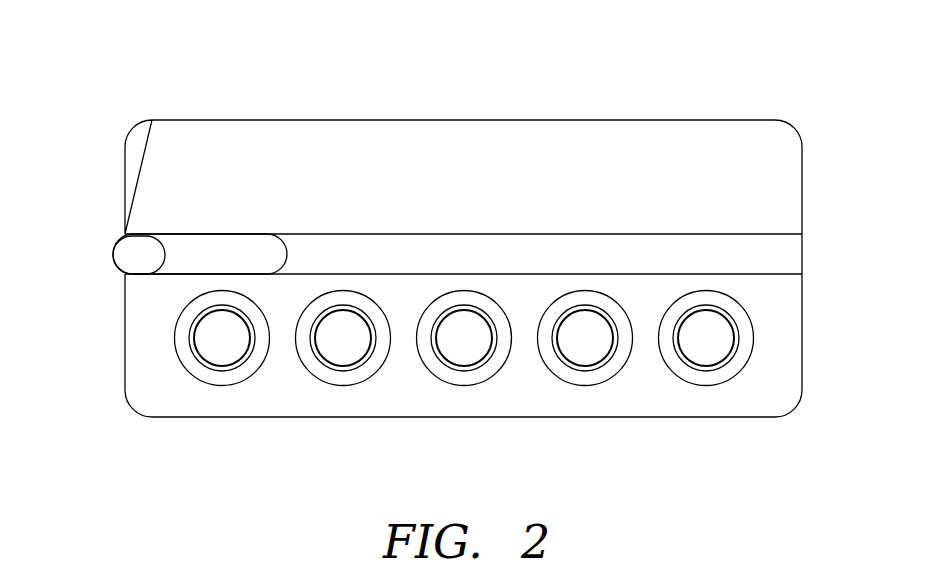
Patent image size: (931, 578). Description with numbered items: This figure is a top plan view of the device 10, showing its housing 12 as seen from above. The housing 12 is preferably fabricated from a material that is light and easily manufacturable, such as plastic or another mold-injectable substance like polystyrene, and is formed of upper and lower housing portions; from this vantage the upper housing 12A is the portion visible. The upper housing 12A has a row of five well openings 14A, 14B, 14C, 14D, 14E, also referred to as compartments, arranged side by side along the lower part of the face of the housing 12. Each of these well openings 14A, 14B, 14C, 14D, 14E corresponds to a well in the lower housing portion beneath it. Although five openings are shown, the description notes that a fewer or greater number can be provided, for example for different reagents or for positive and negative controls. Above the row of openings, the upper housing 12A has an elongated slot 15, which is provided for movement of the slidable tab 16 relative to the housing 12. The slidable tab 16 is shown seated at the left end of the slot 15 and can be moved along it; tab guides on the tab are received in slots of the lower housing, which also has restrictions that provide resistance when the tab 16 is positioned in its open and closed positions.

The device 10 is at (542, 73).
The housing 12 is at (762, 160).
The upper housing portion 12A is at (644, 190).
The well opening 14A is at (223, 386).
The well opening 14B is at (344, 386).
The well opening 14C is at (465, 386).
The well opening 14D is at (586, 386).
The well opening 14E is at (707, 386).
The slot 15 is at (212, 249).
The slidable tab 16 is at (110, 262).